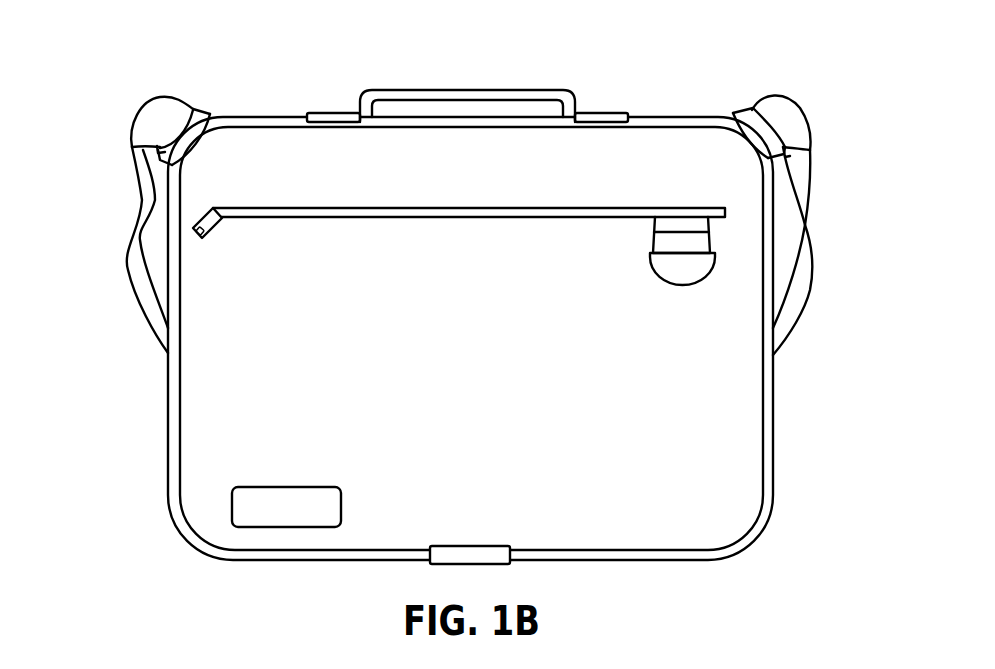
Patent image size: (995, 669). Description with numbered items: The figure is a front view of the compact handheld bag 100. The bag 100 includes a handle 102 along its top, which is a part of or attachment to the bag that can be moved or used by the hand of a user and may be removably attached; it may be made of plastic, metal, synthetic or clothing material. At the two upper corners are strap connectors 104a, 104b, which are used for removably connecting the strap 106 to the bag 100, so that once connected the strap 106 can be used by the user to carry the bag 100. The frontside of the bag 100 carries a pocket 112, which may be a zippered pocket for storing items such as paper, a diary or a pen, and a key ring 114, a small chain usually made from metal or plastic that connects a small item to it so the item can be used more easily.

The compact handheld bag 100 is at (590, 90).
The handle 102 is at (373, 95).
The strap connector 104a is at (190, 110).
The strap connector 104b is at (748, 111).
The strap 106 is at (138, 130).
The pocket 112 is at (281, 217).
The key ring 114 is at (671, 271).